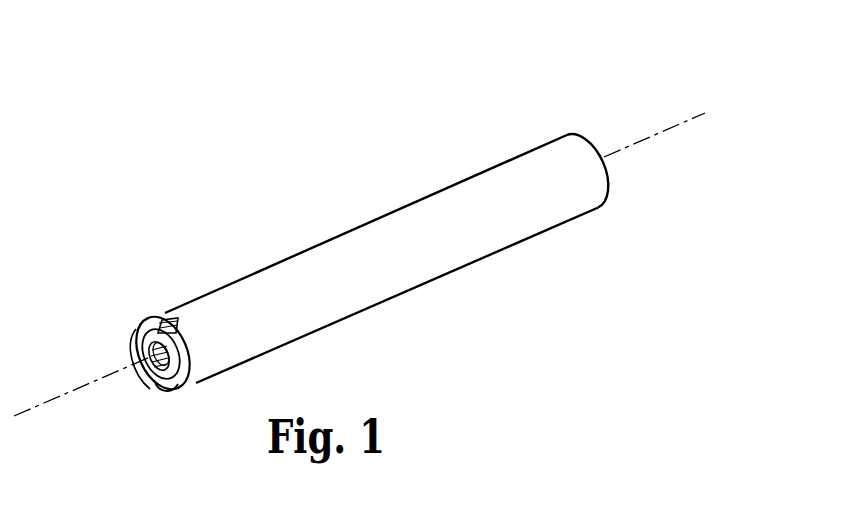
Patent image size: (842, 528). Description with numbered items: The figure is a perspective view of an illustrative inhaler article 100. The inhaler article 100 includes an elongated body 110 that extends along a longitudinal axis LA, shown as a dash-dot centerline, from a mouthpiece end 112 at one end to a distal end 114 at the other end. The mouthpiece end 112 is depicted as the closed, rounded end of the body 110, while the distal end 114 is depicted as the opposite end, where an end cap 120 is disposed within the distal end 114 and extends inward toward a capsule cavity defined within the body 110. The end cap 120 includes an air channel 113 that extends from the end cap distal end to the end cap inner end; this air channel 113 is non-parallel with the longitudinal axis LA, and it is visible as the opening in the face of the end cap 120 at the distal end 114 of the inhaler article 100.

The inhaler article 100 is at (359, 250).
The body 110 is at (407, 204).
The mouthpiece end 112 is at (564, 130).
The air channel 113 is at (174, 320).
The distal end 114 is at (130, 317).
The end cap 120 is at (168, 390).
The longitudinal axis LA is at (63, 393).